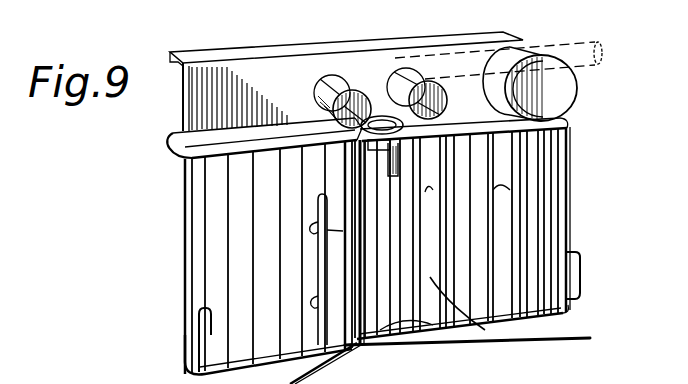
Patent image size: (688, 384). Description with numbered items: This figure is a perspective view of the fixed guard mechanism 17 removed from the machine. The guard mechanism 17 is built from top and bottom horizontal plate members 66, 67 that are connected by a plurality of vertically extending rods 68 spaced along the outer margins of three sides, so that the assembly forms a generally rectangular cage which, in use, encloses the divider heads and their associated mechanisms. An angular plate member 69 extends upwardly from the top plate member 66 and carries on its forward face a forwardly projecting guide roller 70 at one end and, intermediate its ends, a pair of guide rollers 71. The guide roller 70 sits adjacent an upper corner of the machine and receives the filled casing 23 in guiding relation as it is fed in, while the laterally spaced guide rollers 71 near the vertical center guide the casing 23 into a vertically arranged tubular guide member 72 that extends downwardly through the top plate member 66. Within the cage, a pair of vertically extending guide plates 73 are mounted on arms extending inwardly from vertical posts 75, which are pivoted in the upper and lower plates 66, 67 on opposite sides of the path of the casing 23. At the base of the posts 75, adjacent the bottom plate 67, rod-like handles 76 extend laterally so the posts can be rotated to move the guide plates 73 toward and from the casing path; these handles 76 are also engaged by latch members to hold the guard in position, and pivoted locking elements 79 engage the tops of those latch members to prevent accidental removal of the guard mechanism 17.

The fixed guard mechanism 17 is at (572, 155).
The filled casing 23 is at (566, 42).
The top plate member 66 is at (190, 151).
The bottom plate member 67 is at (200, 358).
The vertically extending rods 68 is at (253, 238).
The angular plate member 69 is at (262, 62).
The guide roller 70 is at (572, 89).
The guide rollers 71 is at (340, 82).
The tubular guide member 72 is at (425, 125).
The guide plates 73 is at (321, 272).
The vertical posts 75 is at (368, 317).
The rod-like handles 76 is at (305, 371).
The pivoted locking elements 79 is at (202, 328).